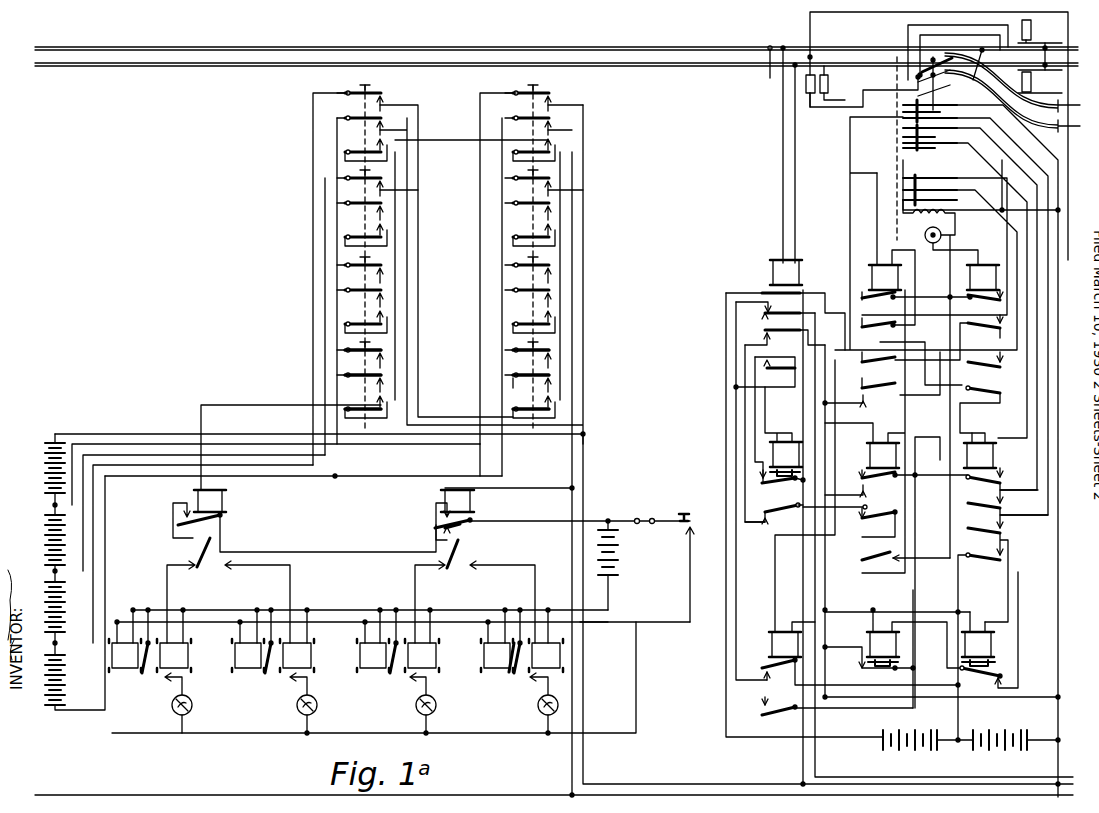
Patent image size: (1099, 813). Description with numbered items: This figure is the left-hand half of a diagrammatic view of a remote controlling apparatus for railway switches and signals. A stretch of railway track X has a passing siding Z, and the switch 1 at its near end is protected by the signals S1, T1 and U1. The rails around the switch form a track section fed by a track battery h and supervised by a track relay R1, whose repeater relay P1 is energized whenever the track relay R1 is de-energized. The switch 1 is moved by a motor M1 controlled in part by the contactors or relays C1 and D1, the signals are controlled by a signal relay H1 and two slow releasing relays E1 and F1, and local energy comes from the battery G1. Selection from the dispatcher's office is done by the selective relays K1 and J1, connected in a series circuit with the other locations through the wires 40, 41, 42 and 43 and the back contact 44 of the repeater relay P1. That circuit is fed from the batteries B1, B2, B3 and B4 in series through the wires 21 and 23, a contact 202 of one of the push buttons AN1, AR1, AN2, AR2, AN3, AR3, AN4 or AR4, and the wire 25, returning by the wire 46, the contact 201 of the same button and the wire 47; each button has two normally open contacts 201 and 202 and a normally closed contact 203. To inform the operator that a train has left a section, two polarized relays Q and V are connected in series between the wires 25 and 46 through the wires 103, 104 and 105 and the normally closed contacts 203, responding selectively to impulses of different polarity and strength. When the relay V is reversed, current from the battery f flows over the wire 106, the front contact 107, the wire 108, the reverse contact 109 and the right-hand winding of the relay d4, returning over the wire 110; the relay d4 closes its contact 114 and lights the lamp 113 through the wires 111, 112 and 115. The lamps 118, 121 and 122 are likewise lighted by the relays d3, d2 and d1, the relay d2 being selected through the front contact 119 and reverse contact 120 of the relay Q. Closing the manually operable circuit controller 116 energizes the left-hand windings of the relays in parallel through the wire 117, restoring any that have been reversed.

The stretch of railway track X is at (676, 58).
The switch 1 is at (930, 46).
The signal T1 is at (1040, 29).
The track battery h is at (1040, 56).
The signal U1 is at (1040, 81).
The passing siding Z is at (1050, 127).
The signal S1 is at (834, 86).
The push button AN1 is at (442, 275).
The push button AR1 is at (345, 183).
The push button AN2 is at (345, 296).
The push button AR2 is at (345, 378).
The push button AN3 is at (489, 264).
The push button AR3 is at (513, 184).
The push button AN4 is at (513, 298).
The push button AR4 is at (513, 376).
The normally open contact 201 is at (381, 350).
The normally open contact 202 is at (381, 375).
The normally closed contact 203 is at (381, 410).
The wire 23 is at (516, 384).
The wire 25 is at (556, 795).
The wire 40 is at (1045, 785).
The battery B1 is at (70, 692).
The battery B2 is at (70, 616).
The battery B3 is at (46, 548).
The battery B4 is at (46, 480).
The wire 21 is at (112, 432).
The wire 105 is at (201, 406).
The wire 104 is at (332, 478).
The polarized relay Q is at (222, 503).
The front contact 119 is at (172, 524).
The reverse contact 120 is at (190, 552).
The wire 103 is at (545, 488).
The polarized relay V is at (470, 506).
The wire 106 is at (545, 518).
The front contact 107 is at (458, 526).
The wire 108 is at (436, 526).
The reverse contact 109 is at (460, 554).
The wire 115 is at (505, 612).
The battery f is at (596, 560).
The wire 110 is at (603, 622).
The wire 111 is at (637, 519).
The manually operable circuit controller 116 is at (682, 514).
The wire 117 is at (690, 576).
The wire 112 is at (636, 648).
The relay d1 is at (150, 653).
The relay d2 is at (273, 653).
The relay d3 is at (397, 653).
The relay d4 is at (520, 653).
The lamp 122 is at (172, 706).
The lamp 121 is at (297, 708).
The lamp 118 is at (416, 708).
The contact 114 is at (512, 676).
The lamp 113 is at (538, 710).
The wire 47 is at (500, 458).
The wire 46 is at (583, 447).
The wire 43 is at (745, 370).
The wire 41 is at (775, 556).
The track relay R1 is at (775, 272).
The contactor or relay C1 is at (882, 272).
The switch motor M1 is at (941, 235).
The contactor or relay D1 is at (985, 264).
The repeater relay P1 is at (783, 442).
The back contact 44 is at (784, 498).
The wire 42 is at (880, 443).
The selective relay K1 is at (870, 462).
The signal relay H1 is at (978, 443).
The second selective relay J1 is at (773, 648).
The slow releasing relay E1 is at (870, 641).
The slow releasing relay F1 is at (994, 640).
The battery G1 is at (970, 753).